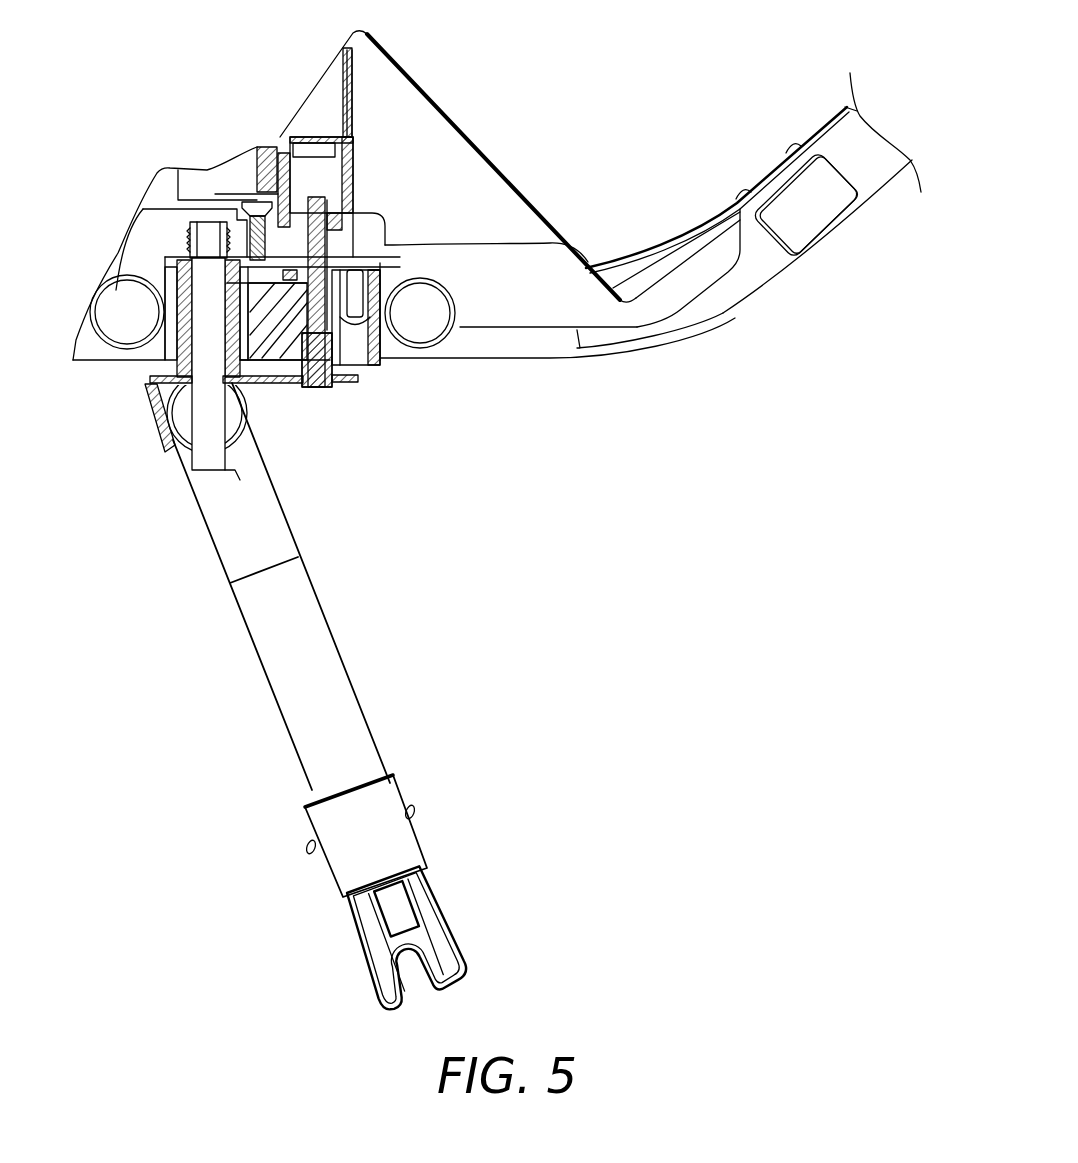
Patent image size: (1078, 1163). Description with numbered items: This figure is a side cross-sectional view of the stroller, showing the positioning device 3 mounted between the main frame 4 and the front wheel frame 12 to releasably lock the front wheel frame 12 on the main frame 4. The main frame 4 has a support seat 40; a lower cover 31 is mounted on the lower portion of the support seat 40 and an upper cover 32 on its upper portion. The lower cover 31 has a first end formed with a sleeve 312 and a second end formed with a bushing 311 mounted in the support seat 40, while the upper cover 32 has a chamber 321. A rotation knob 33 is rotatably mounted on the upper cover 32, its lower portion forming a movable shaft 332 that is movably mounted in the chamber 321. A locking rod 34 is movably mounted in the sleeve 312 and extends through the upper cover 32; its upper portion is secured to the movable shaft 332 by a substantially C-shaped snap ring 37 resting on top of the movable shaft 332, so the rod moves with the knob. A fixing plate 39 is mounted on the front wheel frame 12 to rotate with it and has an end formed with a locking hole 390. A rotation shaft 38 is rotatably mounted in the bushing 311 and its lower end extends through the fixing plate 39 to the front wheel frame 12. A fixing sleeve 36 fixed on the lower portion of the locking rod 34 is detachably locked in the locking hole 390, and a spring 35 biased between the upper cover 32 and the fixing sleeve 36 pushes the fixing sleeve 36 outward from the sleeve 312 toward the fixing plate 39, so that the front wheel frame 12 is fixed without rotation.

The positioning device 3 is at (97, 206).
The main frame 4 is at (847, 143).
The front wheel frame 12 is at (295, 677).
The lower cover 31 is at (273, 347).
The bushing 311 is at (207, 364).
The sleeve 312 is at (170, 427).
The upper cover 32 is at (345, 248).
The chamber 321 is at (330, 224).
The rotation knob 33 is at (263, 157).
The movable shaft 332 is at (335, 203).
The locking rod 34 is at (400, 340).
The spring 35 is at (327, 397).
The fixing sleeve 36 is at (318, 392).
The snap ring 37 is at (347, 152).
The rotation shaft 38 is at (157, 362).
The fixing plate 39 is at (353, 378).
The locking hole 390 is at (306, 392).
The support seat 40 is at (170, 288).